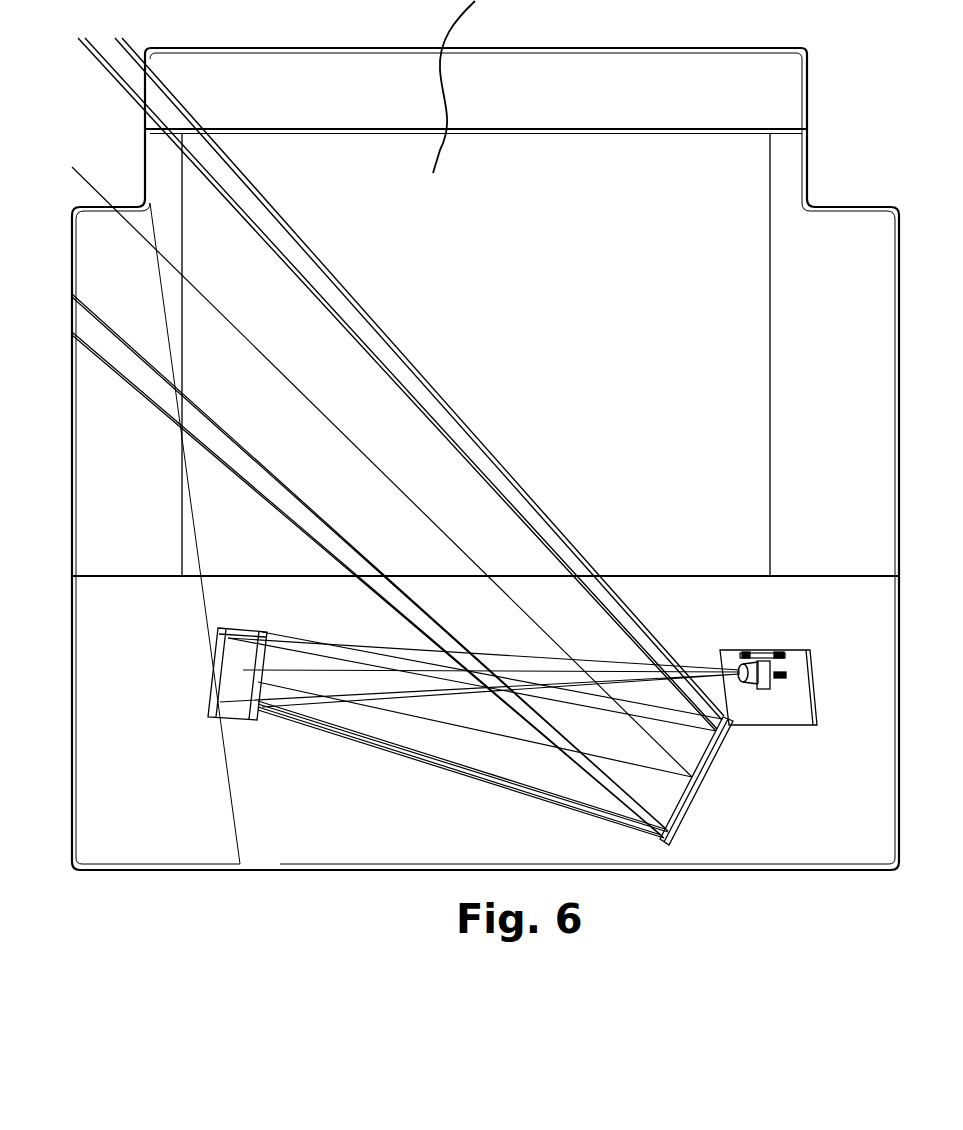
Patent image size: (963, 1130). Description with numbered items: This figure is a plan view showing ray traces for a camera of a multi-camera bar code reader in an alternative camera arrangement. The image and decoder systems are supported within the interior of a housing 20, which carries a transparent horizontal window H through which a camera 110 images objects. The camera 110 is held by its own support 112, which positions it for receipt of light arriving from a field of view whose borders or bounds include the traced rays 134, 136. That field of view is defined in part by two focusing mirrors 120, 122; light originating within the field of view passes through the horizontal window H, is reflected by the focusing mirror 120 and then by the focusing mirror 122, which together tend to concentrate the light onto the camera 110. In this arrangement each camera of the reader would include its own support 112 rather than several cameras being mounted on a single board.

The housing 20 is at (570, 93).
The horizontal window H is at (505, 576).
The camera 110 is at (757, 653).
The support 112 is at (772, 710).
The focusing mirror 120 is at (693, 783).
The focusing mirror 122 is at (235, 673).
The field of view border 134 is at (587, 558).
The field of view border 136 is at (340, 565).